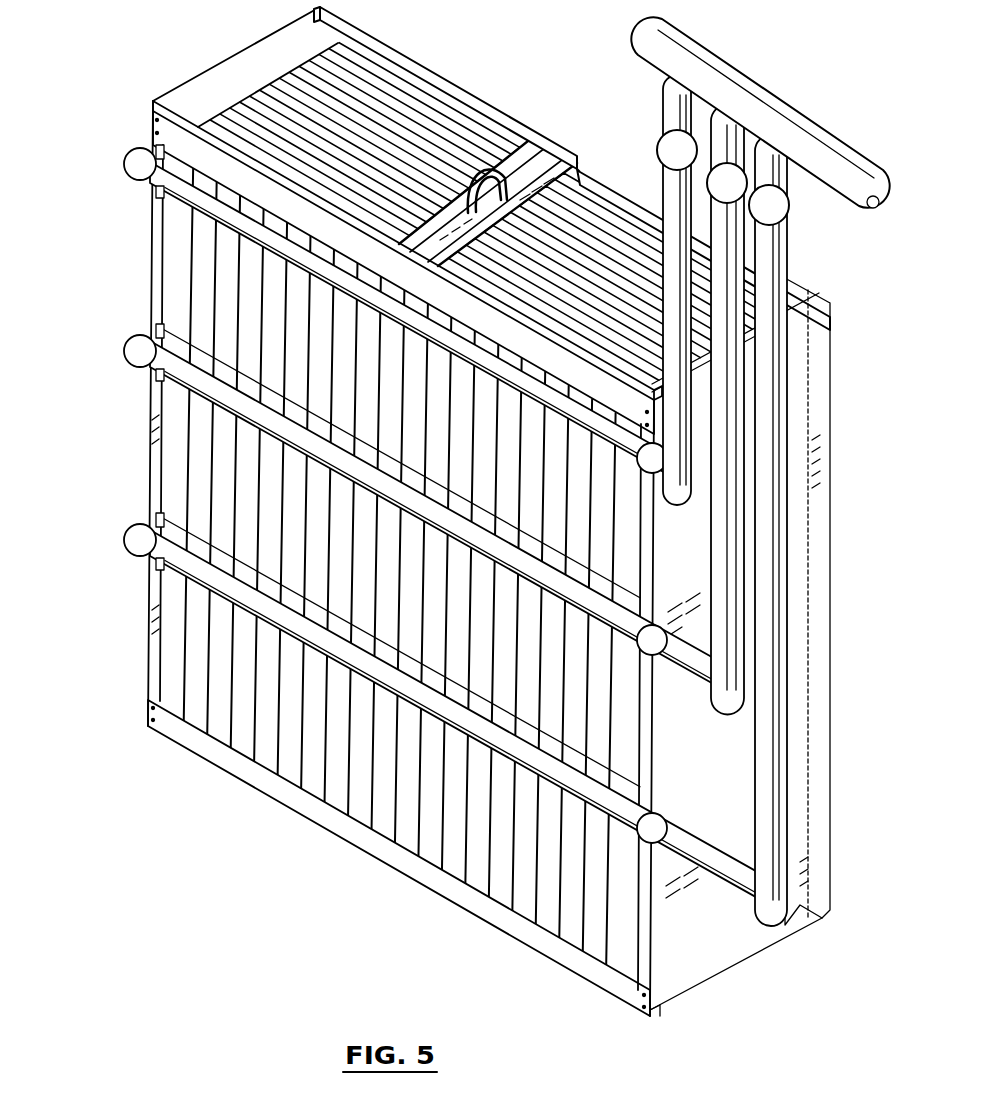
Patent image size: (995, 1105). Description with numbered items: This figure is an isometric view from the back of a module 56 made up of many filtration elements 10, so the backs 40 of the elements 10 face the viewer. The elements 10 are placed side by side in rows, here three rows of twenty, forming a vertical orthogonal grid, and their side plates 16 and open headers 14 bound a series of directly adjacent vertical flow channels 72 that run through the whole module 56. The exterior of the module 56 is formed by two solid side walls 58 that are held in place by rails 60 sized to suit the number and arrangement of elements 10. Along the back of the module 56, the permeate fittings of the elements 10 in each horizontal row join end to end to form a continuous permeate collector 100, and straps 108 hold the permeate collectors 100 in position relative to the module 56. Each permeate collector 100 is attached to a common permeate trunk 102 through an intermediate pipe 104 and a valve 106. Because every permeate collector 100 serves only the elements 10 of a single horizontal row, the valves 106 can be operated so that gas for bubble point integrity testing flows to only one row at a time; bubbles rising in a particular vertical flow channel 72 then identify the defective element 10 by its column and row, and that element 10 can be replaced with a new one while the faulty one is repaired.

The element 10 is at (475, 536).
The open header 14 is at (338, 596).
The side plate 16 is at (205, 298).
The back 40 is at (475, 536).
The module 56 is at (474, 536).
The side wall 58 is at (790, 400).
The rail 60 is at (168, 128).
The vertical flow channel 72 is at (396, 104).
The permeate collector 100 is at (412, 505).
The permeate trunk 102 is at (770, 78).
The intermediate pipe 104 is at (772, 260).
The valve 106 is at (789, 207).
The strap 108 is at (150, 183).